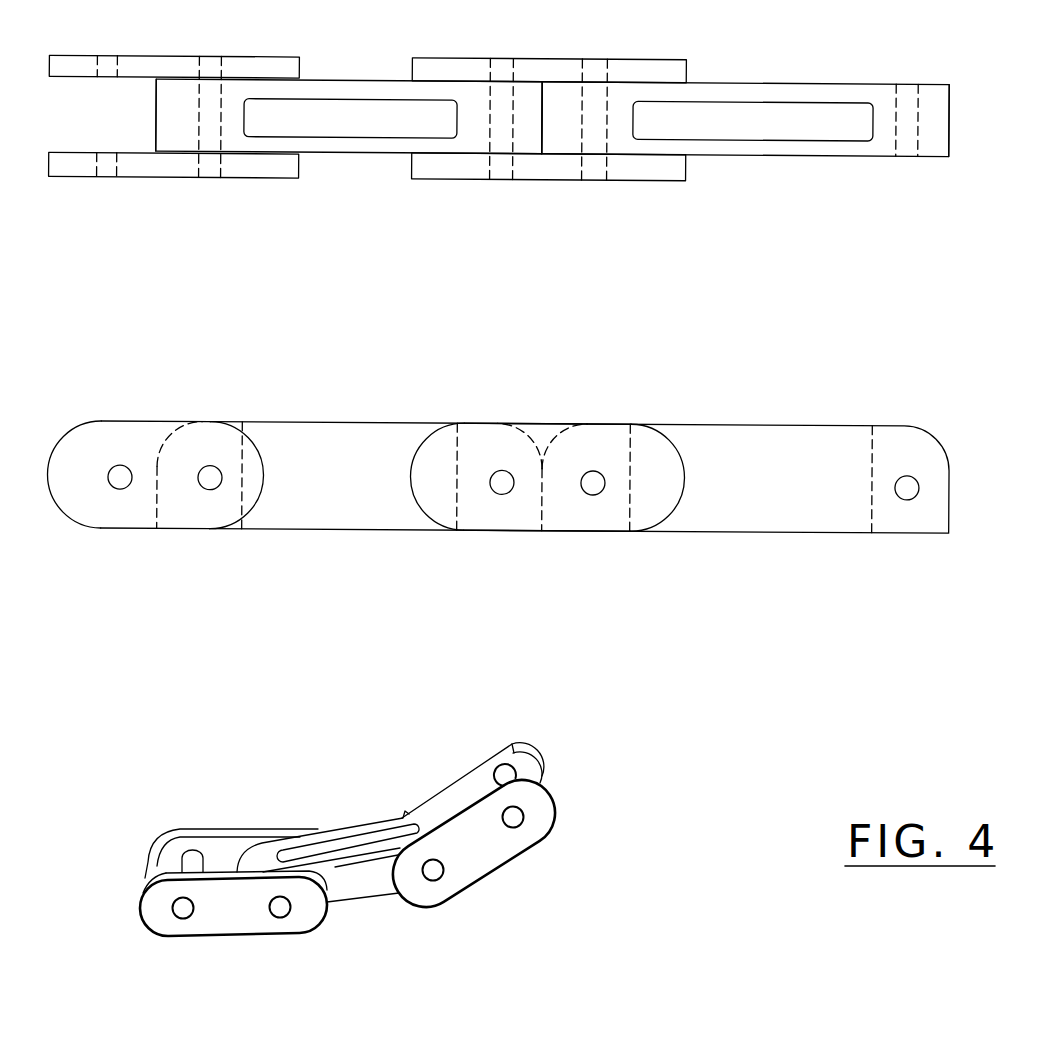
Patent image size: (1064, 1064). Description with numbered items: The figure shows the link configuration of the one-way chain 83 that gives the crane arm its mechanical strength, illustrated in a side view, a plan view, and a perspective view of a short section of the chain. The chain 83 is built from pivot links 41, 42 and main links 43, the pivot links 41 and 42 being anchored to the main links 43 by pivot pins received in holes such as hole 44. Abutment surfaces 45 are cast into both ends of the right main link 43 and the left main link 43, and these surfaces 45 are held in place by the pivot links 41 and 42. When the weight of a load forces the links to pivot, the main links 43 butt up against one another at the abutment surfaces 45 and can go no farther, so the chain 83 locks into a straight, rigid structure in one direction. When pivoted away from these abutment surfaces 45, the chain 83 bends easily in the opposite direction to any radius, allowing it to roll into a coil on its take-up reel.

The pivot link 41 is at (77, 178).
The pivot link 42 is at (663, 182).
The main link 43 is at (808, 146).
The hole 44 is at (907, 143).
The abutment surface 45 is at (157, 113).
The one-way chain 83 is at (358, 143).